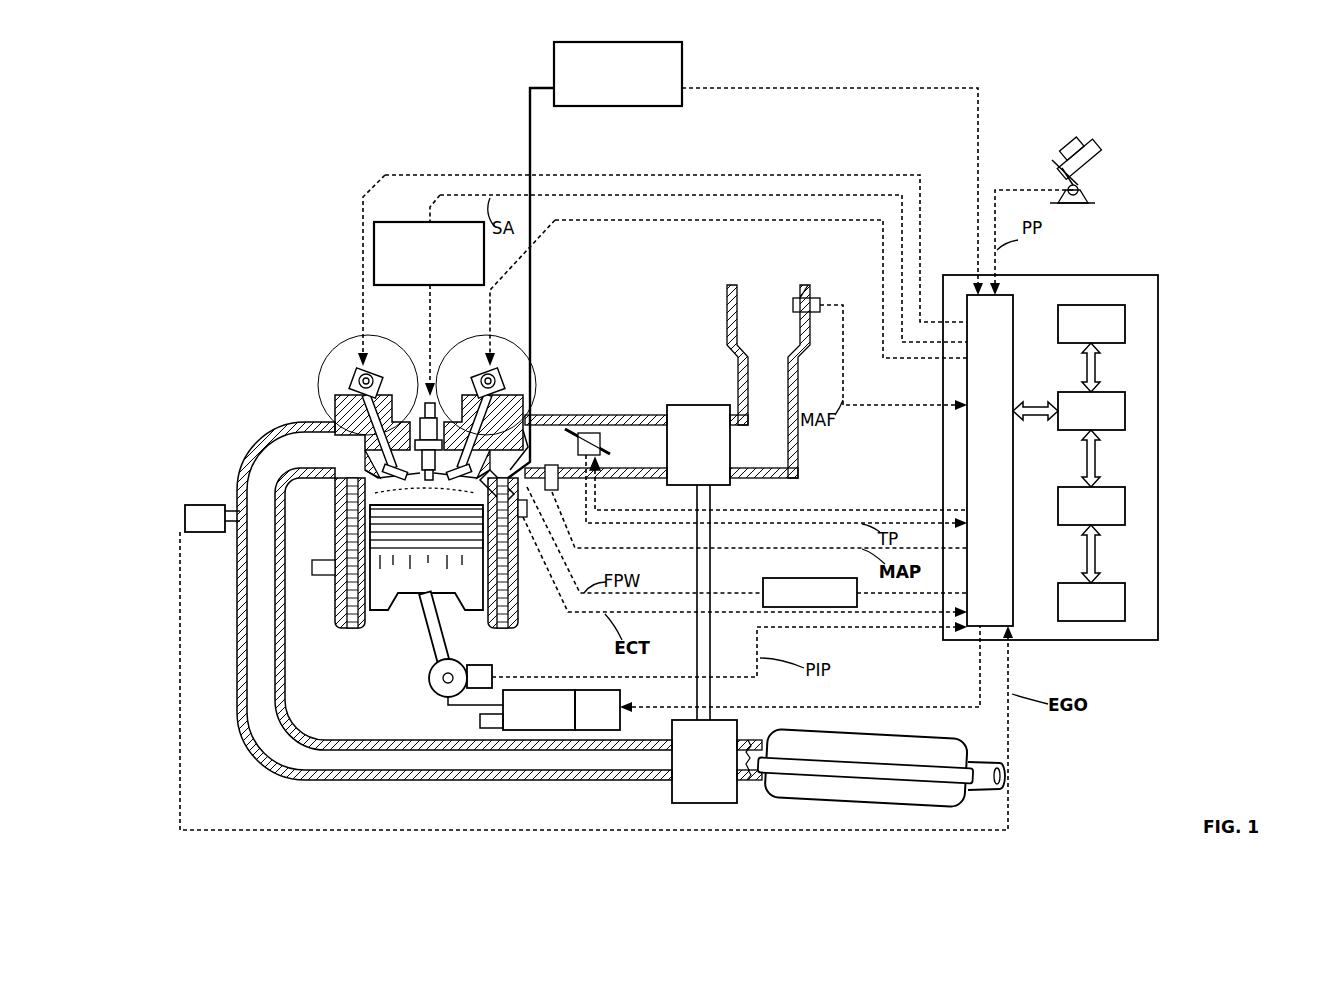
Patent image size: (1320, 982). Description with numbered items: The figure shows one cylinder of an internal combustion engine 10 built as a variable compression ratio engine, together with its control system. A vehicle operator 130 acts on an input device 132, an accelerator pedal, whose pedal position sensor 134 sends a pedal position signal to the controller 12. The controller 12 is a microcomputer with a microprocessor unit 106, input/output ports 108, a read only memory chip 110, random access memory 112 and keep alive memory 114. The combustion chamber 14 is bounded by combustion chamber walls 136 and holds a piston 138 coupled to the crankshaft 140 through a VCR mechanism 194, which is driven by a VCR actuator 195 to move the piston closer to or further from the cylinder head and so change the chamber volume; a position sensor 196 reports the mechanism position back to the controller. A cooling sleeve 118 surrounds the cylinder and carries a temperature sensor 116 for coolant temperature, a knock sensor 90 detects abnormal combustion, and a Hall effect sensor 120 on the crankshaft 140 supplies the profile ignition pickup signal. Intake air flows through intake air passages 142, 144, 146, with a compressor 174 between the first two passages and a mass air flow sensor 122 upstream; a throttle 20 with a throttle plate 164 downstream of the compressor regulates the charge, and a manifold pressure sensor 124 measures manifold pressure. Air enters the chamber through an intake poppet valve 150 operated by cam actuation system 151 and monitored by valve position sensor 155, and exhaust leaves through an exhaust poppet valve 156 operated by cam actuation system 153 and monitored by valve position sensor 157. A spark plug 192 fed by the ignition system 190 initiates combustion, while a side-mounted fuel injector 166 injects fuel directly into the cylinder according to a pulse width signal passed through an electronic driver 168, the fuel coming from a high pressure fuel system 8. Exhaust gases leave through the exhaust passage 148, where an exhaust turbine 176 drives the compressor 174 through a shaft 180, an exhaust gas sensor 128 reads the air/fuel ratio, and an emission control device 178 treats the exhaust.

The internal combustion engine 10 is at (172, 115).
The high pressure fuel system 8 is at (682, 53).
The controller 12 is at (1158, 275).
The combustion chamber 14 is at (340, 500).
The throttle 20 is at (590, 430).
The knock sensor 90 is at (330, 576).
The microprocessor unit 106 is at (1125, 405).
The input/output ports 108 is at (1015, 300).
The read only memory chip 110 is at (1125, 318).
The random access memory 112 is at (1125, 503).
The keep alive memory 114 is at (1125, 600).
The temperature sensor 116 is at (528, 520).
The cooling sleeve 118 is at (510, 622).
The Hall effect sensor 120 is at (482, 665).
The mass air flow sensor 122 is at (822, 300).
The manifold pressure sensor 124 is at (557, 492).
The exhaust gas sensor 128 is at (185, 510).
The vehicle operator 130 is at (1105, 155).
The input device 132 is at (1052, 165).
The pedal position sensor 134 is at (1080, 190).
The combustion chamber walls 136 is at (360, 630).
The piston 138 is at (412, 600).
The crankshaft 140 is at (428, 683).
The intake air passage 142 is at (768, 381).
The intake air passage 144 is at (661, 446).
The intake air passage 146 is at (548, 440).
The exhaust passage 148 is at (454, 601).
The intake poppet valve 150 is at (435, 418).
The cam actuation system 151 is at (472, 362).
The cam actuation system 153 is at (376, 365).
The valve position sensor 155 is at (520, 370).
The exhaust poppet valve 156 is at (345, 405).
The valve position sensor 157 is at (340, 368).
The throttle plate 164 is at (555, 418).
The fuel injector 166 is at (496, 476).
The electronic driver 168 is at (763, 580).
The compressor 174 is at (688, 405).
The exhaust turbine 176 is at (672, 788).
The emission control device 178 is at (940, 734).
The shaft 180 is at (712, 690).
The ignition system 190 is at (390, 222).
The spark plug 192 is at (425, 405).
The VCR mechanism 194 is at (539, 710).
The VCR actuator 195 is at (597, 710).
The position sensor 196 is at (480, 722).